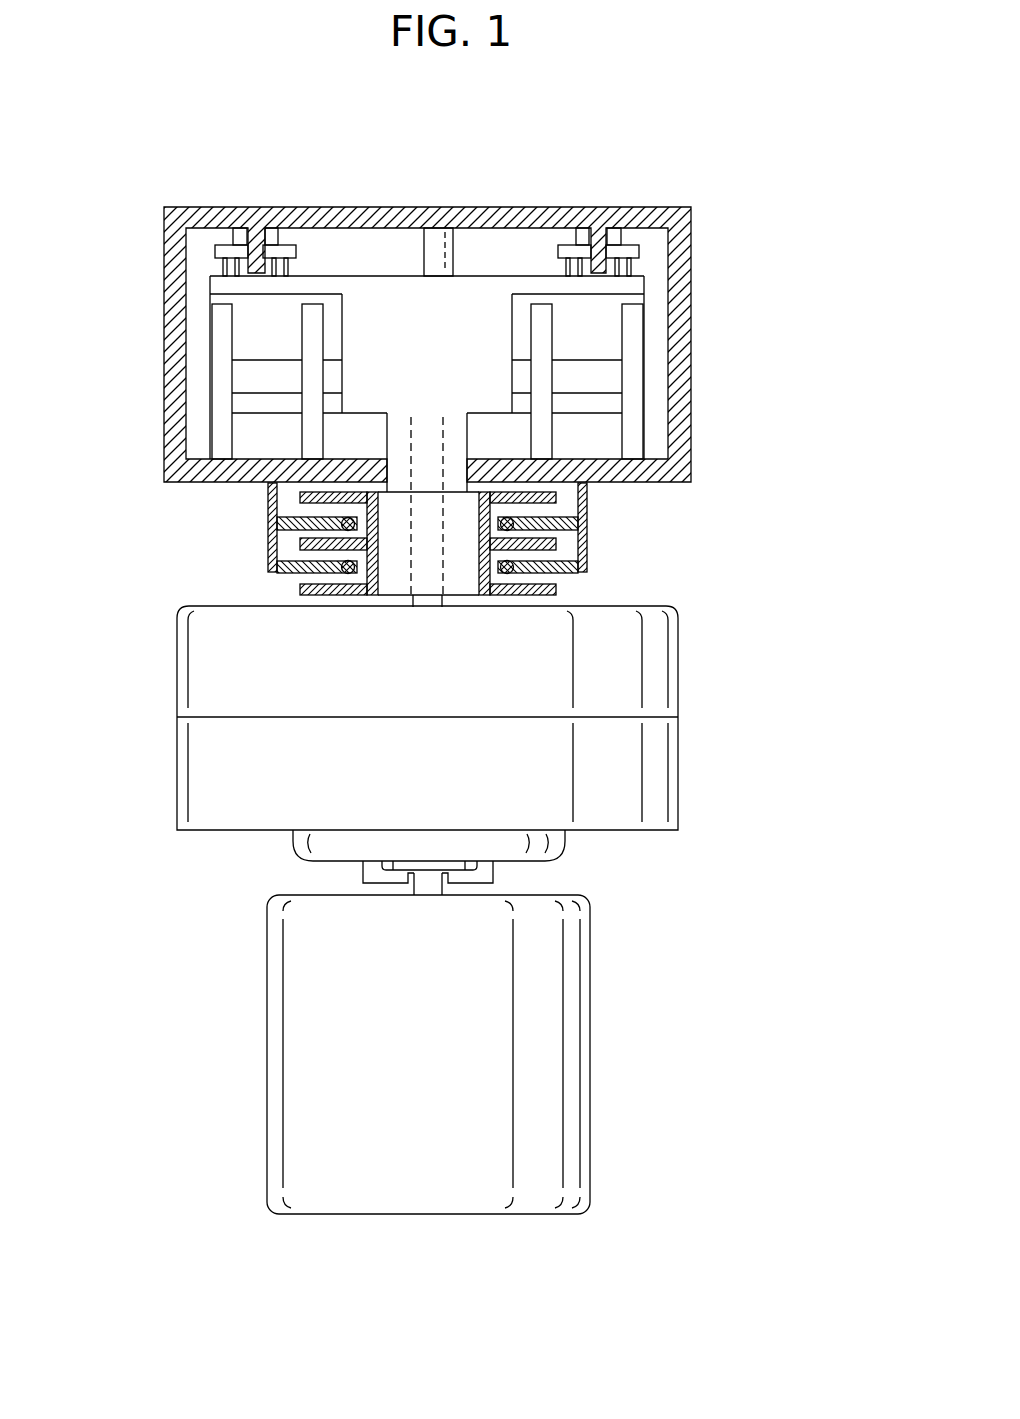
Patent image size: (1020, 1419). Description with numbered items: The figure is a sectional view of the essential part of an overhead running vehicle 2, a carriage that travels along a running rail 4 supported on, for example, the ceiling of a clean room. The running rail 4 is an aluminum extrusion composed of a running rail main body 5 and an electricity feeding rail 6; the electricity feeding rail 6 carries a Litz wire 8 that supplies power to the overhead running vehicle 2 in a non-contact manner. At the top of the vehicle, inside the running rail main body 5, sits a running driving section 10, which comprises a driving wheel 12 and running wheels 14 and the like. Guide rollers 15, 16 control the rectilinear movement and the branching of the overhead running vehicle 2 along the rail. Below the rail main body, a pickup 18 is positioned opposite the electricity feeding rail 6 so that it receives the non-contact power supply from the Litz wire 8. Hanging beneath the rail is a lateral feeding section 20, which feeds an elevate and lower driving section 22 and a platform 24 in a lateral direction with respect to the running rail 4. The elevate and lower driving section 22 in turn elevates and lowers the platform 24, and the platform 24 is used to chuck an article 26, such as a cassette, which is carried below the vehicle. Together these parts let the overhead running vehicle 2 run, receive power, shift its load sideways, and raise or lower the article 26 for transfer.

The overhead running vehicle 2 is at (448, 1240).
The running rail 4 is at (448, 368).
The running rail main body 5 is at (680, 392).
The electricity feeding rail 6 is at (440, 577).
The Litz wire 8 is at (355, 571).
The running driving section 10 is at (470, 312).
The driving wheel 12 is at (442, 237).
The running wheels 14 is at (218, 355).
The guide roller 15 is at (277, 238).
The guide roller 16 is at (236, 237).
The pickup 18 is at (267, 498).
The lateral feeding section 20 is at (473, 718).
The elevate and lower driving section 22 is at (658, 772).
The platform 24 is at (560, 843).
The article 26 is at (548, 997).